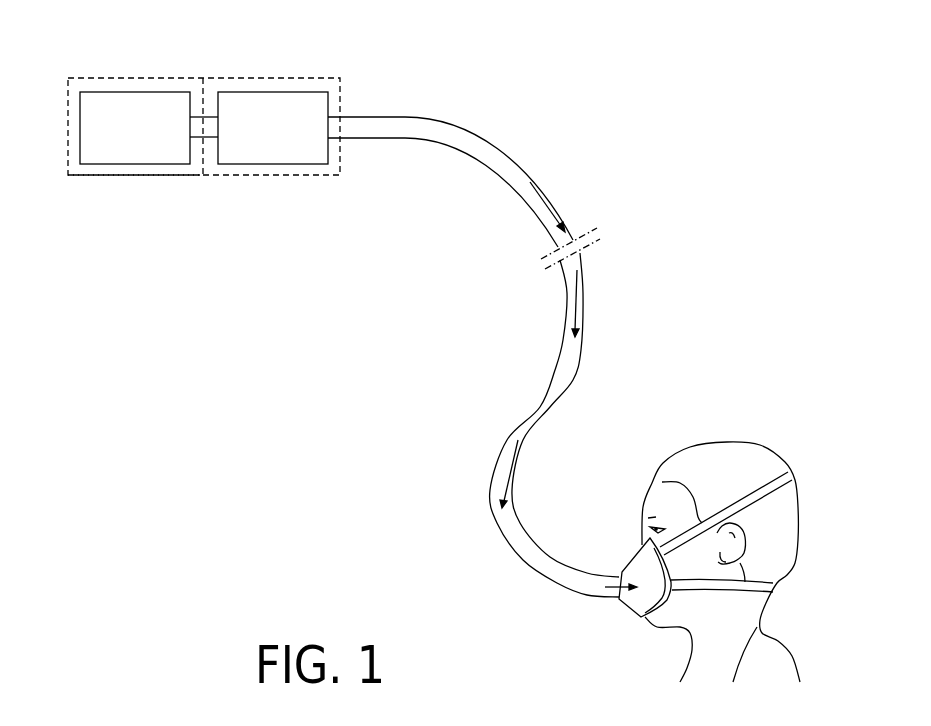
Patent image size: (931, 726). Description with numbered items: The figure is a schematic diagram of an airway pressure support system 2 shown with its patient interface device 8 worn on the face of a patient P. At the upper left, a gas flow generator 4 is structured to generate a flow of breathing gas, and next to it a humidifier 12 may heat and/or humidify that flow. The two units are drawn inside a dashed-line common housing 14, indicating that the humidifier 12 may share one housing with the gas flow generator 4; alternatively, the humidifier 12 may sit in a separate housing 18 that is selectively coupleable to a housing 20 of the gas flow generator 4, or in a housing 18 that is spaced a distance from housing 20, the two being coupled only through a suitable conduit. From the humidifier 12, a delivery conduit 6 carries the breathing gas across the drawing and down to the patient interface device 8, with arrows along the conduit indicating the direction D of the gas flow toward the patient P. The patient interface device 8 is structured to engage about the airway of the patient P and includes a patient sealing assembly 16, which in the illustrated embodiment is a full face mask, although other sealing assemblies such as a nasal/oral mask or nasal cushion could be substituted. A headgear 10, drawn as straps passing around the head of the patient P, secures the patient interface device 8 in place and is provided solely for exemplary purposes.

The airway pressure support system 2 is at (681, 211).
The gas flow generator 4 is at (172, 165).
The delivery conduit 6 is at (476, 133).
The patient interface device 8 is at (622, 536).
The headgear 10 is at (773, 480).
The humidifier 12 is at (312, 165).
The common housing 14 is at (176, 78).
The patient sealing assembly 16 is at (630, 607).
The separate housing 18 is at (252, 180).
The housing of gas flow generator 20 is at (98, 180).
The flow direction D is at (505, 467).
The patient P is at (735, 442).